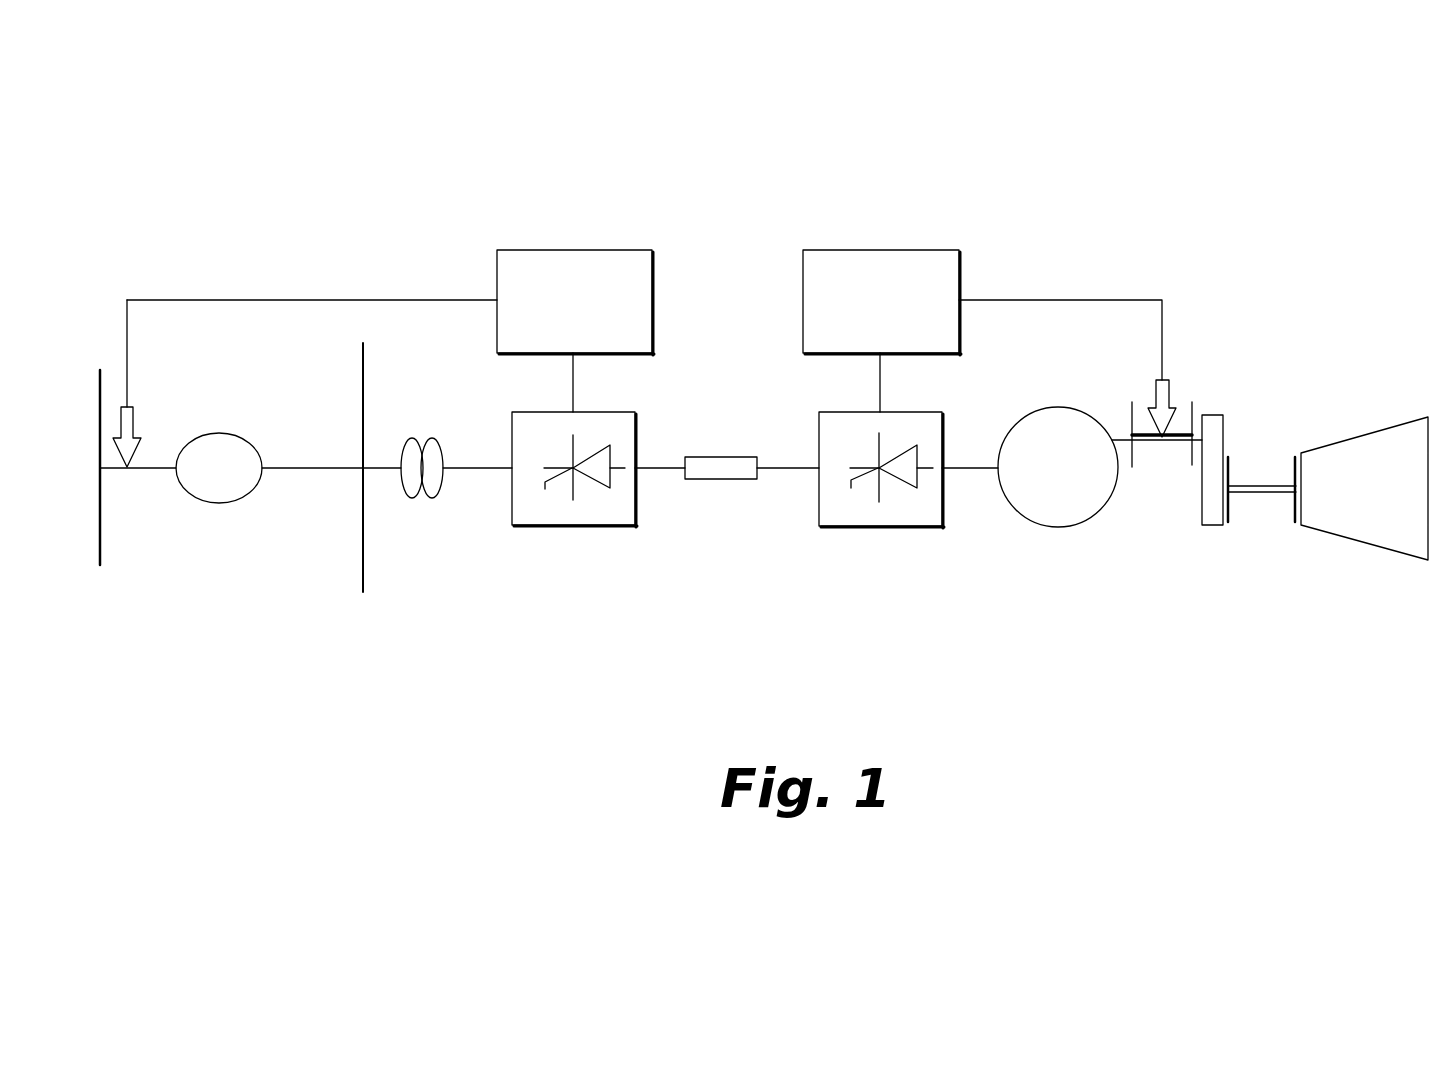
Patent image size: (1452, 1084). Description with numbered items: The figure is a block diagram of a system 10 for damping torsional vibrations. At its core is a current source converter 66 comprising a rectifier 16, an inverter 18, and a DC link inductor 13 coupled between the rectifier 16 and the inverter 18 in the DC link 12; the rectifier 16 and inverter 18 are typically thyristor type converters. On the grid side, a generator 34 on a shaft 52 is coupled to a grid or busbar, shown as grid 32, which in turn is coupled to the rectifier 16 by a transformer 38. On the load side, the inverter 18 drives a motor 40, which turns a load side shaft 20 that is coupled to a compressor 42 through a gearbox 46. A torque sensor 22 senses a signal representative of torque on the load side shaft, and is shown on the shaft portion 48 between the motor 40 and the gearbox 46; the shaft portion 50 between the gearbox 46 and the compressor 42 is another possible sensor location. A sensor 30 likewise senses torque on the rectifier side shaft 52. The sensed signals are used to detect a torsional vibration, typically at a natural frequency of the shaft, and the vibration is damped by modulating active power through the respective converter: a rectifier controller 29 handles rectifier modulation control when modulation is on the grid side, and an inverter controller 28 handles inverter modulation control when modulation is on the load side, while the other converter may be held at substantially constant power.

The system 10 is at (1290, 326).
The DC link 12 is at (726, 530).
The DC link inductor 13 is at (737, 457).
The rectifier 16 is at (582, 527).
The inverter 18 is at (940, 412).
The load side shaft 20 is at (1155, 543).
The torque sensor 22 is at (1158, 412).
The inverter controller 28 is at (888, 250).
The rectifier controller 29 is at (587, 250).
The sensor 30 is at (128, 420).
The grid 32 is at (363, 377).
The generator 34 is at (233, 503).
The transformer 38 is at (430, 497).
The motor 40 is at (1036, 525).
The compressor 42 is at (1380, 545).
The gearbox 46 is at (1208, 517).
The shaft portion 48 is at (1148, 442).
The shaft portion 50 is at (1257, 483).
The shaft 52 is at (152, 468).
The current source converter 66 is at (903, 557).